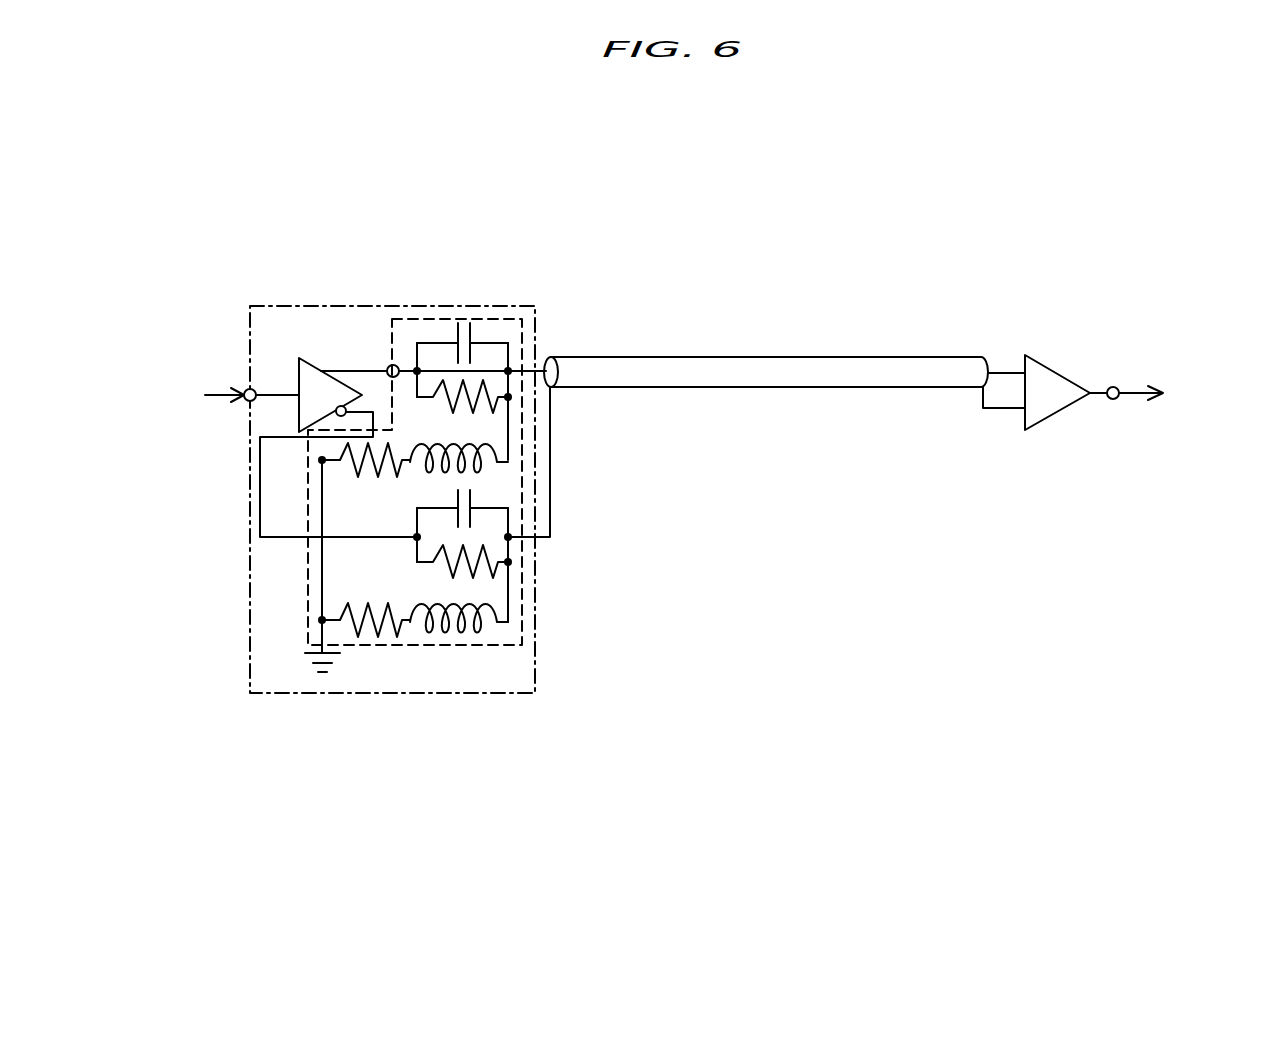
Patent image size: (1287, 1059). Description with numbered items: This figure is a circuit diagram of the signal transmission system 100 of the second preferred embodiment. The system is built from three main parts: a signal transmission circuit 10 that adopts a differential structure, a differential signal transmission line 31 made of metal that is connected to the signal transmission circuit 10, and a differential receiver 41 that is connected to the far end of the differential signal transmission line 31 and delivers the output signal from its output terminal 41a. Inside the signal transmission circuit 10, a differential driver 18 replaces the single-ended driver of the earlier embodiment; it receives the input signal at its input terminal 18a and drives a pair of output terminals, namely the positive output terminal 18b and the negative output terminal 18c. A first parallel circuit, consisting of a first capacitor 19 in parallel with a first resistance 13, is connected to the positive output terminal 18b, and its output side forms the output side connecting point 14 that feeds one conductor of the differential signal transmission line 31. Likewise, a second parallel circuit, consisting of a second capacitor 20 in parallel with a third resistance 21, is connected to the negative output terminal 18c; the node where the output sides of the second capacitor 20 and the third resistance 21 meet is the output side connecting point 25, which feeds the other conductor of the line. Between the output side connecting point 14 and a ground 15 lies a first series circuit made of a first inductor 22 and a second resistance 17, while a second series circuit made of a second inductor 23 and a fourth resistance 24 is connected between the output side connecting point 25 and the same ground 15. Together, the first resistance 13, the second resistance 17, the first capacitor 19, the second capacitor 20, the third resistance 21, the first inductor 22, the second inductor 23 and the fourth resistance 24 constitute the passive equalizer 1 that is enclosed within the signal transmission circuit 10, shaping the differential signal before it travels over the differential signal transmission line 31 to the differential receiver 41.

The signal transmission system 100 is at (765, 188).
The signal transmission circuit 10 is at (360, 306).
The differential driver 18 is at (310, 360).
The input terminal 18a is at (244, 390).
The positive output terminal 18b is at (390, 365).
The negative output terminal 18c is at (257, 481).
The first capacitor 19 is at (458, 320).
The output side connecting point 14 is at (508, 365).
The differential signal transmission line 31 is at (647, 373).
The differential receiver 41 is at (1047, 378).
The output terminal 41a is at (1113, 400).
The first resistance 13 is at (508, 399).
The first inductor 22 is at (498, 463).
The second capacitor 20 is at (472, 498).
The output side connecting point 25 is at (512, 538).
The third resistance 21 is at (495, 570).
The second inductor 23 is at (498, 626).
The second resistance 17 is at (340, 463).
The passive equalizer 1 is at (522, 640).
The fourth resistance 24 is at (366, 635).
The ground 15 is at (325, 678).